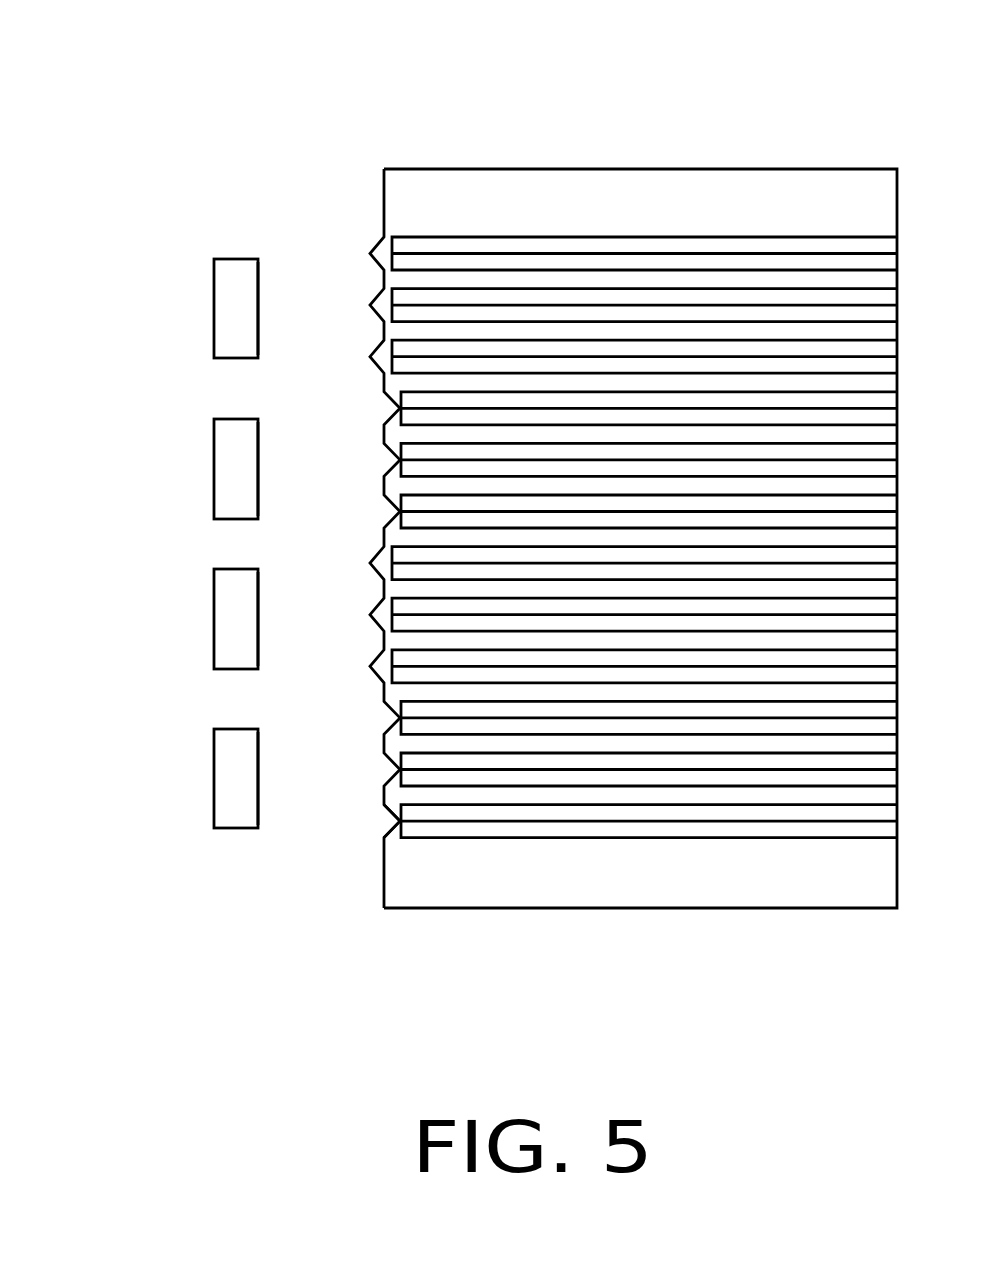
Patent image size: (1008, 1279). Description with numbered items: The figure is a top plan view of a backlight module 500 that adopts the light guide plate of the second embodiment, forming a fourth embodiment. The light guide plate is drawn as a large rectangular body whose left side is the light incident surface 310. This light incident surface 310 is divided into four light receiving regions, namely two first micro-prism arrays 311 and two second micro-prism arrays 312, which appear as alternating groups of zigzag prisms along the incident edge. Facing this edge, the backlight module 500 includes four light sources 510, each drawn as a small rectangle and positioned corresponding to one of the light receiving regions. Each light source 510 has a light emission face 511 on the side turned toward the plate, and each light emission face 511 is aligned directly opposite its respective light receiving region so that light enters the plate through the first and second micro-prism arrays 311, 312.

The backlight module 500 is at (669, 50).
The light incident surface 310 is at (559, 569).
The first micro-prism array 311 is at (377, 253).
The second micro-prism array 312 is at (395, 819).
The light source 510 is at (232, 305).
The light emission face 511 is at (258, 287).